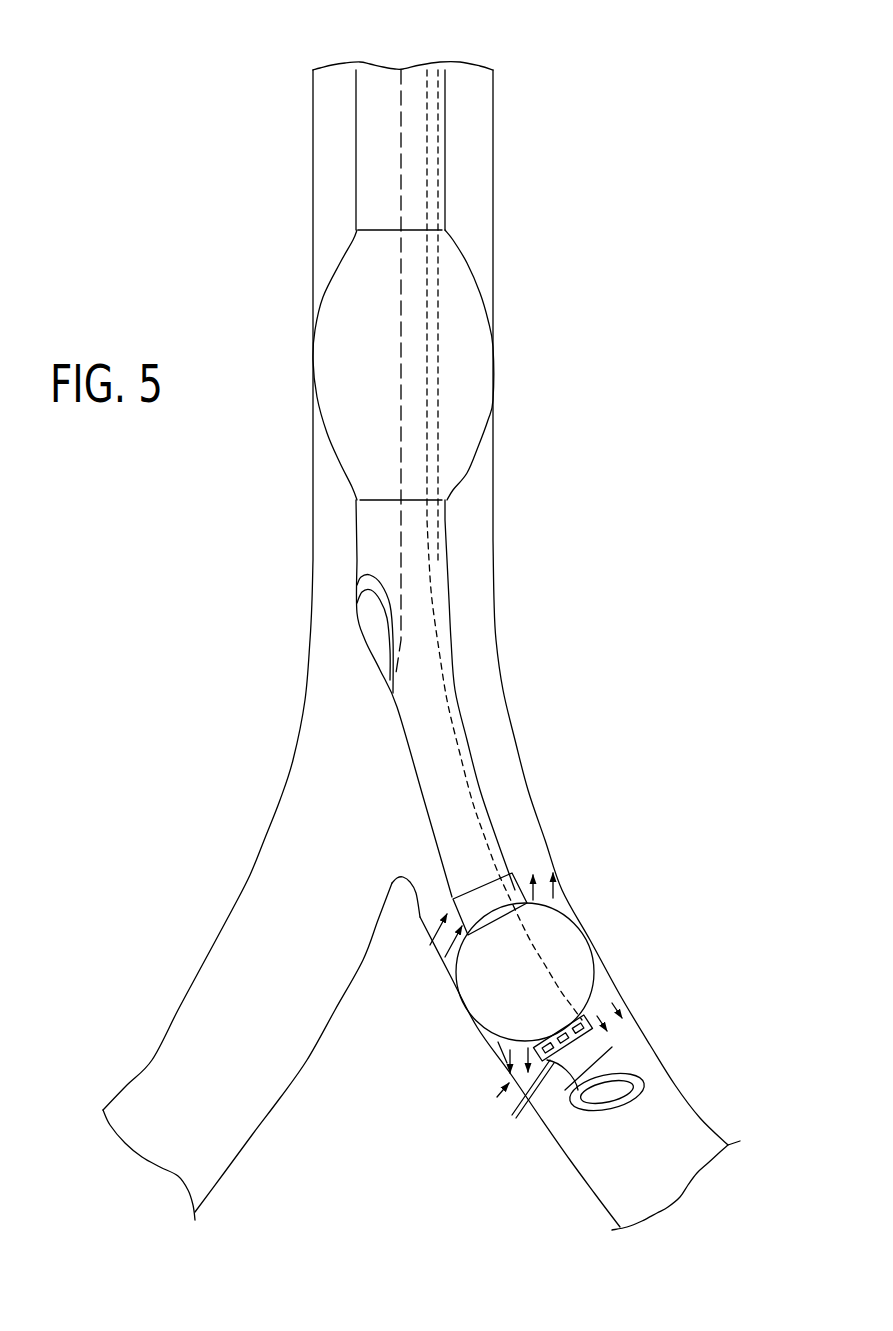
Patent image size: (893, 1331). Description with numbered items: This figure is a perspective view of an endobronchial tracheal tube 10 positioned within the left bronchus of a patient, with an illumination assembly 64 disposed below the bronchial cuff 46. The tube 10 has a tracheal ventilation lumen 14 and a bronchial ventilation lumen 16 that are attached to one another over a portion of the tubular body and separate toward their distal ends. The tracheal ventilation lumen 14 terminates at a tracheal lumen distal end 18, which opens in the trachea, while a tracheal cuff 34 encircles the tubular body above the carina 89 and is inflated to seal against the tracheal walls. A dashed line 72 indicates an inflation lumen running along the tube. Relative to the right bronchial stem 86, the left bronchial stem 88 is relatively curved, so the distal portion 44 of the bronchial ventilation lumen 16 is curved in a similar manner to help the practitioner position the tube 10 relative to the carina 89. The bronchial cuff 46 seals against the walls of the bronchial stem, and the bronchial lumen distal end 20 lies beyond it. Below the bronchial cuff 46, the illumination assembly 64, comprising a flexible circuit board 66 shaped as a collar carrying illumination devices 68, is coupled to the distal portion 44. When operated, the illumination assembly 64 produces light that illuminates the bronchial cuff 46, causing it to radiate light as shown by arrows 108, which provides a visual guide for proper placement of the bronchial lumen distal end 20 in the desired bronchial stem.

The tracheal tube 10 is at (270, 62).
The tracheal ventilation lumen 14 is at (376, 66).
The bronchial ventilation lumen 16 is at (415, 66).
The tracheal cuff 34 is at (333, 458).
The guidewire lumen 72 is at (433, 523).
The tracheal lumen distal end 18 is at (348, 633).
The left bronchial stem 88 is at (512, 806).
The right bronchial stem 86 is at (277, 870).
The carina 89 is at (385, 882).
The distal portion 44 is at (442, 912).
The bronchial lumen distal end 20 is at (612, 1117).
The bronchial cuff 46 is at (500, 1048).
The illumination assembly 64 is at (522, 1080).
The illumination devices 68 is at (553, 1064).
The flexible circuit board 66 is at (612, 1041).
The arrows 108 is at (556, 893).